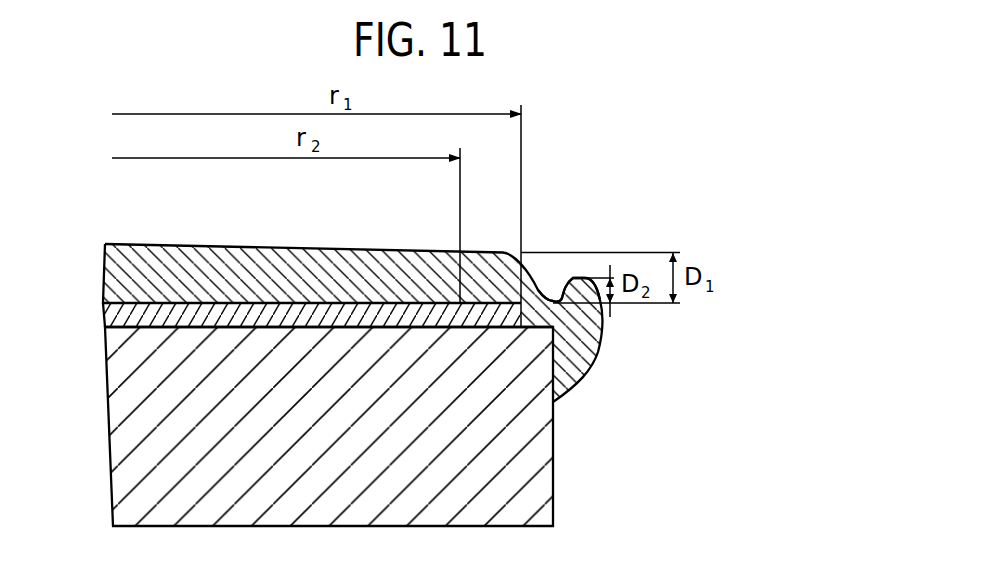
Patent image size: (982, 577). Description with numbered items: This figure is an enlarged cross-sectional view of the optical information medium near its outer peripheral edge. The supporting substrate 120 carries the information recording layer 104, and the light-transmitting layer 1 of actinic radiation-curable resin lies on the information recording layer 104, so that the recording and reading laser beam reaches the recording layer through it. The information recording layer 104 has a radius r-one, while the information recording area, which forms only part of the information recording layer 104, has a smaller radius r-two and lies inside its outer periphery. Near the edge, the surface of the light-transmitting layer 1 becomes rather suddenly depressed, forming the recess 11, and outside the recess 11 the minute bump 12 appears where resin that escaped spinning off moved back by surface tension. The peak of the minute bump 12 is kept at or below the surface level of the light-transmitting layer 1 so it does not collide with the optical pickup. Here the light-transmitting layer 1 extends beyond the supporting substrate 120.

The light-transmitting layer 1 is at (372, 270).
The recess 11 is at (556, 292).
The minute bump 12 is at (578, 280).
The information recording layer 104 is at (258, 302).
The supporting substrate 120 is at (543, 461).